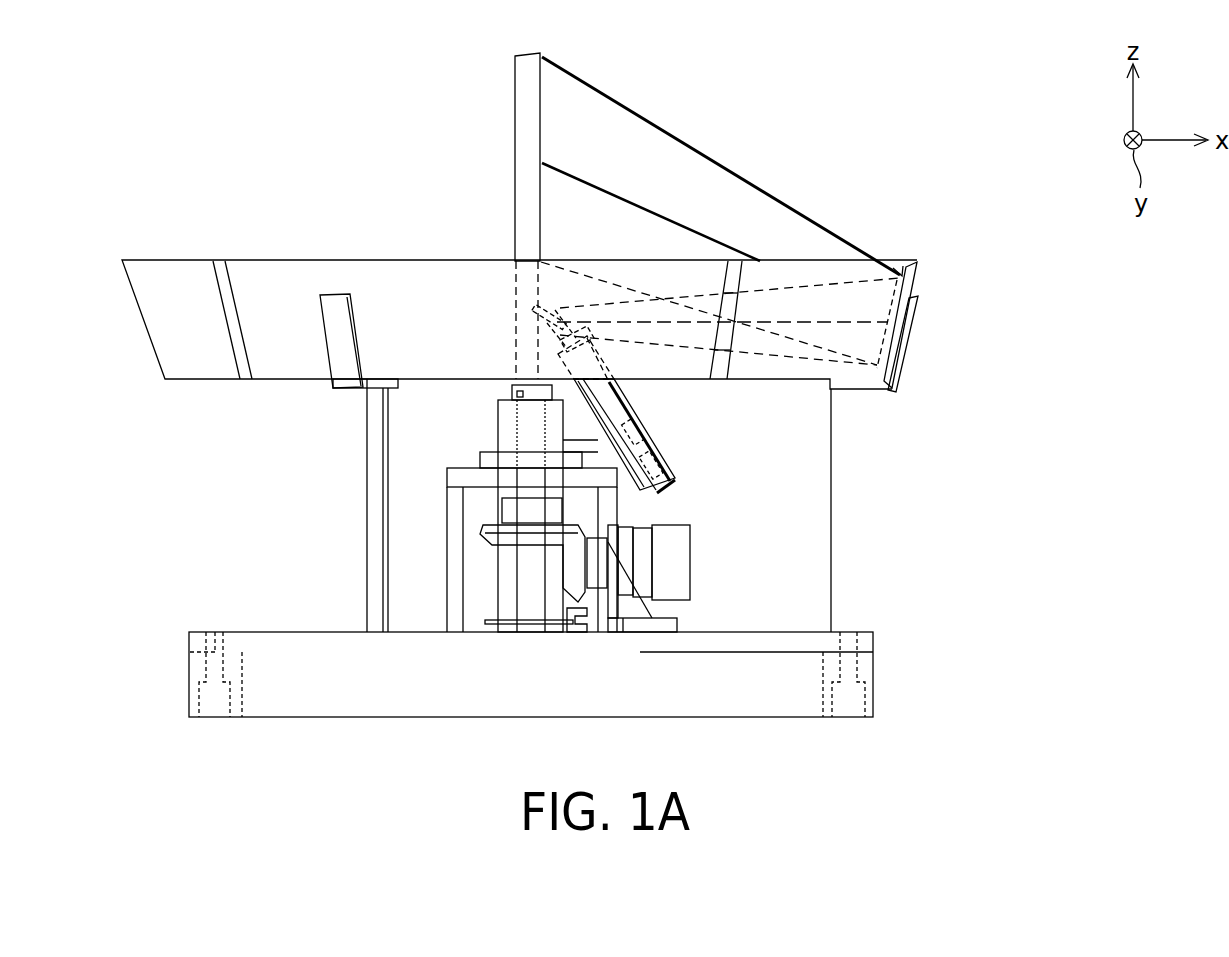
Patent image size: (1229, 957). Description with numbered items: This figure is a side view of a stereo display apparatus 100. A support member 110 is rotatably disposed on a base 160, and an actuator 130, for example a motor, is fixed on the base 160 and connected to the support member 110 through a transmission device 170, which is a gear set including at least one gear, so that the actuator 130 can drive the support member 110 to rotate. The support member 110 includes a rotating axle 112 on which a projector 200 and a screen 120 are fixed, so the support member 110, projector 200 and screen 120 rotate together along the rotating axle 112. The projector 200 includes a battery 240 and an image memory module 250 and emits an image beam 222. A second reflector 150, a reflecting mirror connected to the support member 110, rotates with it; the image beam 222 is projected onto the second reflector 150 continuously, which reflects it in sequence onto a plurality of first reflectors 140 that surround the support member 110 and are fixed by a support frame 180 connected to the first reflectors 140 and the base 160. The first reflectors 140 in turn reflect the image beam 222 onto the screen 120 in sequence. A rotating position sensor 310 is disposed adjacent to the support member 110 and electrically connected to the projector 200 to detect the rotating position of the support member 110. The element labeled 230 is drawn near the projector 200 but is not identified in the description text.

The stereo display apparatus 100 is at (1103, 731).
The support member 110 is at (530, 438).
The rotating axle 112 is at (543, 322).
The screen 120 is at (515, 68).
The actuator 130 is at (693, 563).
The first reflectors 140 is at (896, 262).
The second reflector 150 is at (540, 318).
The base 160 is at (763, 703).
The transmission device 170 is at (506, 538).
The support frame 180 is at (163, 273).
The projector 200 is at (612, 398).
The image beam 222 is at (573, 313).
The lens element 230 is at (556, 352).
The battery 240 is at (669, 488).
The image memory module 250 is at (648, 428).
The rotating position sensor 310 is at (515, 389).